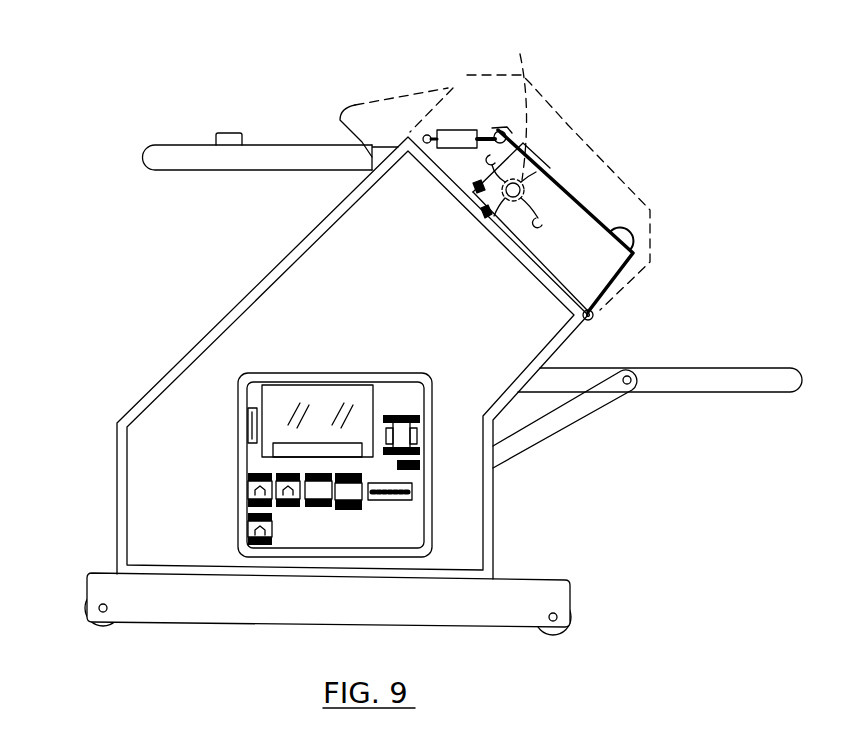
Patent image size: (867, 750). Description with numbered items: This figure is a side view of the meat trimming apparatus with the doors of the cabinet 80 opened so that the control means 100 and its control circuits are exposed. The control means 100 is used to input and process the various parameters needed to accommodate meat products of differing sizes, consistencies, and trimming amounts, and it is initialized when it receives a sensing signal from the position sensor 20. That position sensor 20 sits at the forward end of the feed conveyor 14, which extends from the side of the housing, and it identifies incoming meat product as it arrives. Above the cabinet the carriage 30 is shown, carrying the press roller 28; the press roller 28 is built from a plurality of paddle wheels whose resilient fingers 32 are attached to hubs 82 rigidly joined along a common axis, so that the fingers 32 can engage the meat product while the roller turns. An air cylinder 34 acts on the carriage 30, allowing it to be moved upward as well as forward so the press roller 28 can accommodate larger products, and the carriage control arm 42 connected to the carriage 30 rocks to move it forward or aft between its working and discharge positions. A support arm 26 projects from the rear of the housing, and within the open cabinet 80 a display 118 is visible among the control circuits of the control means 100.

The control means 100 is at (228, 361).
The feed conveyor 14 is at (173, 170).
The position sensor 20 is at (224, 132).
The air cylinder 34 is at (456, 130).
The hub 82 is at (522, 103).
The resilient finger 32 is at (565, 132).
The press roller 28 is at (534, 193).
The carriage 30 is at (589, 205).
The carriage control arm 42 is at (622, 235).
The support arm 26 is at (493, 468).
The cabinet 80 is at (238, 408).
The display screen 118 is at (272, 423).